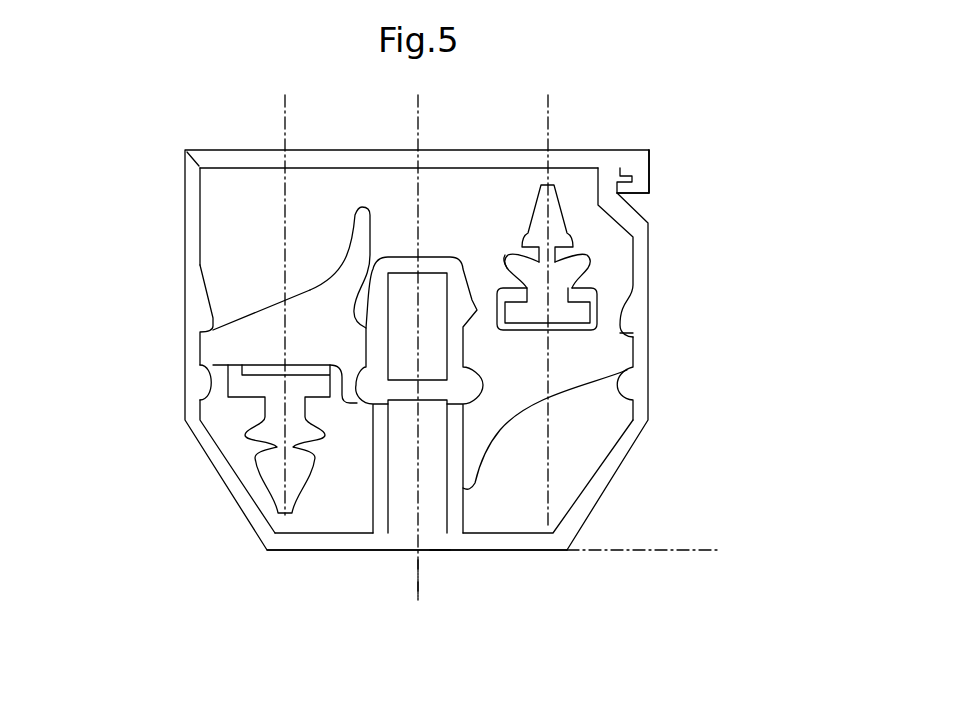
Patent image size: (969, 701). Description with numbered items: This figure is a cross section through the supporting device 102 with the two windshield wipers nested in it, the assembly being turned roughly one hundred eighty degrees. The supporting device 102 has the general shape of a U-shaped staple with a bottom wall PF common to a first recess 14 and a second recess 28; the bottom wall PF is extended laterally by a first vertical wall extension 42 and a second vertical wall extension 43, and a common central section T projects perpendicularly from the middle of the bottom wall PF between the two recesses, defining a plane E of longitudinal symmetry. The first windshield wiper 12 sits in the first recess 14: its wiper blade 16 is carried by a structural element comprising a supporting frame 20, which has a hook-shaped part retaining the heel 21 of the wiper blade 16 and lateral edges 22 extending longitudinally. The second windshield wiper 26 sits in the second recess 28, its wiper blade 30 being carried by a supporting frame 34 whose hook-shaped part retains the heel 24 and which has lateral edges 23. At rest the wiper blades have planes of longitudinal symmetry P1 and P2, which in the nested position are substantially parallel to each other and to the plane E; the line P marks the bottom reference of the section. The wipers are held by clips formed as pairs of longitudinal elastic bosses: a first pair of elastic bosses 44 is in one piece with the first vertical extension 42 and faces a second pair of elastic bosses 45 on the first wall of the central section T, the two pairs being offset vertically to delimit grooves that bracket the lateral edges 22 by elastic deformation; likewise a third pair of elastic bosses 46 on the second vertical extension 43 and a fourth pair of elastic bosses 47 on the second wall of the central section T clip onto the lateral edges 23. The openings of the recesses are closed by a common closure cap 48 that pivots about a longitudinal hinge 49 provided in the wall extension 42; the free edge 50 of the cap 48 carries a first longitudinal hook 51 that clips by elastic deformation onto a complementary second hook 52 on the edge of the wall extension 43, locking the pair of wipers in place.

The first windshield wiper 12 is at (245, 505).
The first recess 14 is at (324, 512).
The wiper blade 16 is at (276, 486).
The supporting frame 20 is at (346, 258).
The heel 21 is at (557, 314).
The lateral edges 22 is at (421, 350).
The lateral edges 23 is at (207, 352).
The heel 24 is at (244, 332).
The second windshield wiper 26 is at (514, 245).
The second recess 28 is at (548, 476).
The wiper blade 30 is at (540, 192).
The supporting frame 34 is at (522, 395).
The first vertical wall extension 42 is at (193, 211).
The second vertical wall extension 43 is at (642, 272).
The first pair of elastic bosses 44 is at (205, 317).
The second pair of elastic bosses 45 is at (366, 352).
The third pair of elastic bosses 46 is at (468, 312).
The fourth pair of elastic bosses 47 is at (627, 314).
The common closure cap 48 is at (353, 148).
The longitudinal hinge 49 is at (198, 148).
The free edge 50 is at (657, 131).
The first longitudinal hook 51 is at (642, 172).
The second hook 52 is at (620, 165).
The supporting device 102 is at (190, 276).
The plane of longitudinal symmetry P1 is at (282, 98).
The plane of longitudinal symmetry P2 is at (550, 510).
The reference plane P is at (693, 550).
The common central section T is at (426, 255).
The plane of longitudinal symmetry E is at (417, 583).
The bottom wall PF is at (440, 552).